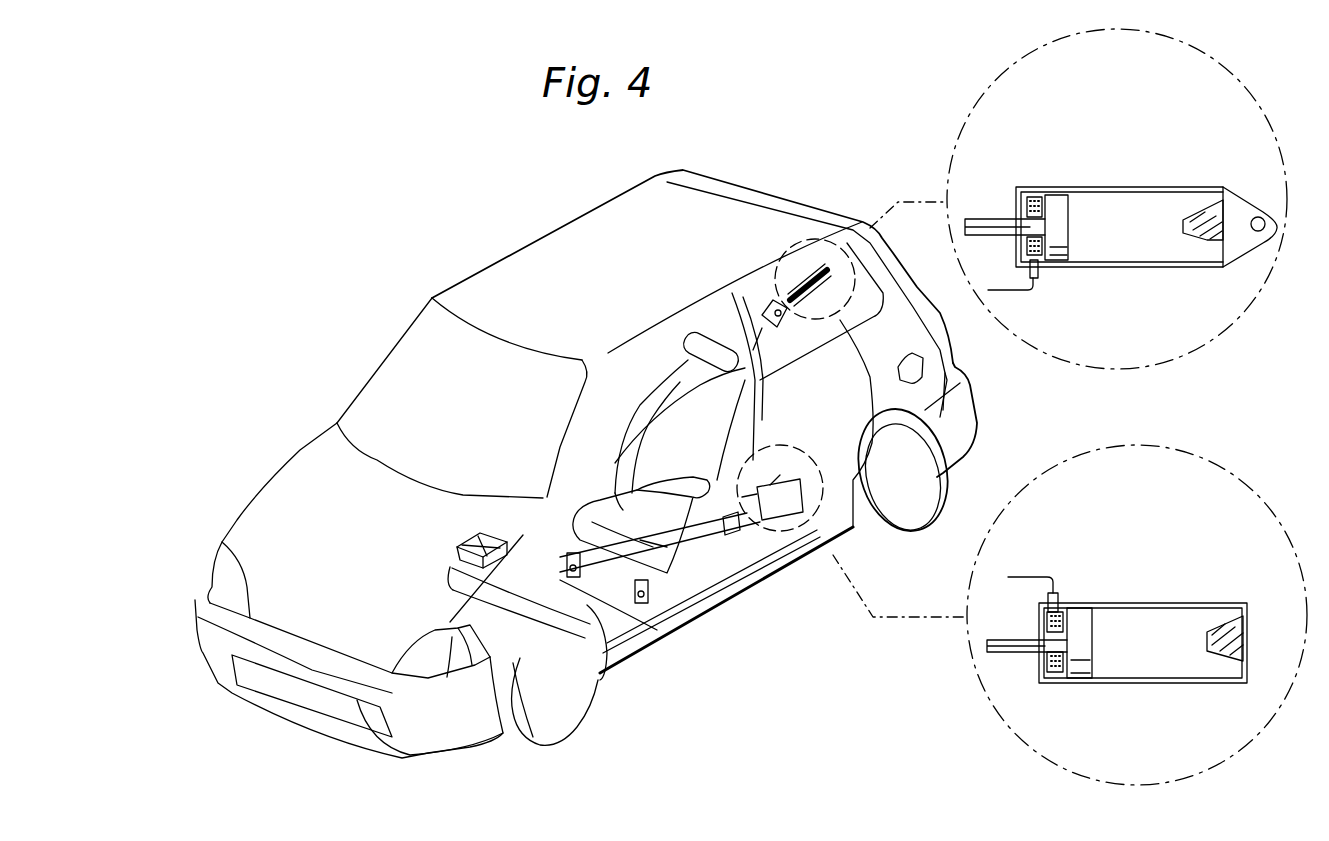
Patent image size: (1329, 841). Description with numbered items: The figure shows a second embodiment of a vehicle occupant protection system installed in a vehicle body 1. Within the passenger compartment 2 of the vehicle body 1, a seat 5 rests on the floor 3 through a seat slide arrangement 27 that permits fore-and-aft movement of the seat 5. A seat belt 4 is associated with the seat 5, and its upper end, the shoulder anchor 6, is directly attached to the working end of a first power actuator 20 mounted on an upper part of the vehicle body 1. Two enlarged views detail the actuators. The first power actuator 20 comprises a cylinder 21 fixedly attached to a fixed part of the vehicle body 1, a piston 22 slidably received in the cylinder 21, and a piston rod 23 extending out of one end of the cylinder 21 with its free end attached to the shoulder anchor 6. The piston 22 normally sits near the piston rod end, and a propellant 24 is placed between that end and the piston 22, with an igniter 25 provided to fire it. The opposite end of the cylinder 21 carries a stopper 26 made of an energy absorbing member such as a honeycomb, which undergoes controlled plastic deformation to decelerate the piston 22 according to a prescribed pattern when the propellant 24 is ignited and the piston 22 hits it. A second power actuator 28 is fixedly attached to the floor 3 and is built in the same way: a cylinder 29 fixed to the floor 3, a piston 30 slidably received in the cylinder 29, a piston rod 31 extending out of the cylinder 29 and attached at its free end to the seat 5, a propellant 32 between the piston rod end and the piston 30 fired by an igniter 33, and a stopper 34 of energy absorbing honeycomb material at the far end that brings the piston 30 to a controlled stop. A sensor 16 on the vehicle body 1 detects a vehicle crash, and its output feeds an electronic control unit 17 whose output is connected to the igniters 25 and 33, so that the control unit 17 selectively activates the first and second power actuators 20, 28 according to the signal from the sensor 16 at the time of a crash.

The vehicle body 1 is at (545, 248).
The passenger compartment 2 is at (642, 358).
The floor 3 is at (628, 612).
The seat belt 4 is at (687, 400).
The seat 5 is at (697, 335).
The shoulder anchor 6 is at (787, 325).
The sensor 16 is at (490, 530).
The electronic control unit 17 is at (462, 556).
The first power actuator 20 is at (817, 268).
The cylinder 21 is at (1125, 187).
The piston 22 is at (1060, 195).
The piston rod 23 is at (983, 224).
The propellant 24 is at (1029, 196).
The igniter 25 is at (1040, 270).
The stopper 26 is at (1199, 216).
The seat slide arrangement 27 is at (673, 577).
The second power actuator 28 is at (787, 508).
The cylinder 29 is at (1148, 603).
The piston 30 is at (1082, 612).
The piston rod 31 is at (1004, 640).
The propellant 32 is at (1057, 673).
The igniter 33 is at (1056, 592).
The stopper 34 is at (1220, 632).